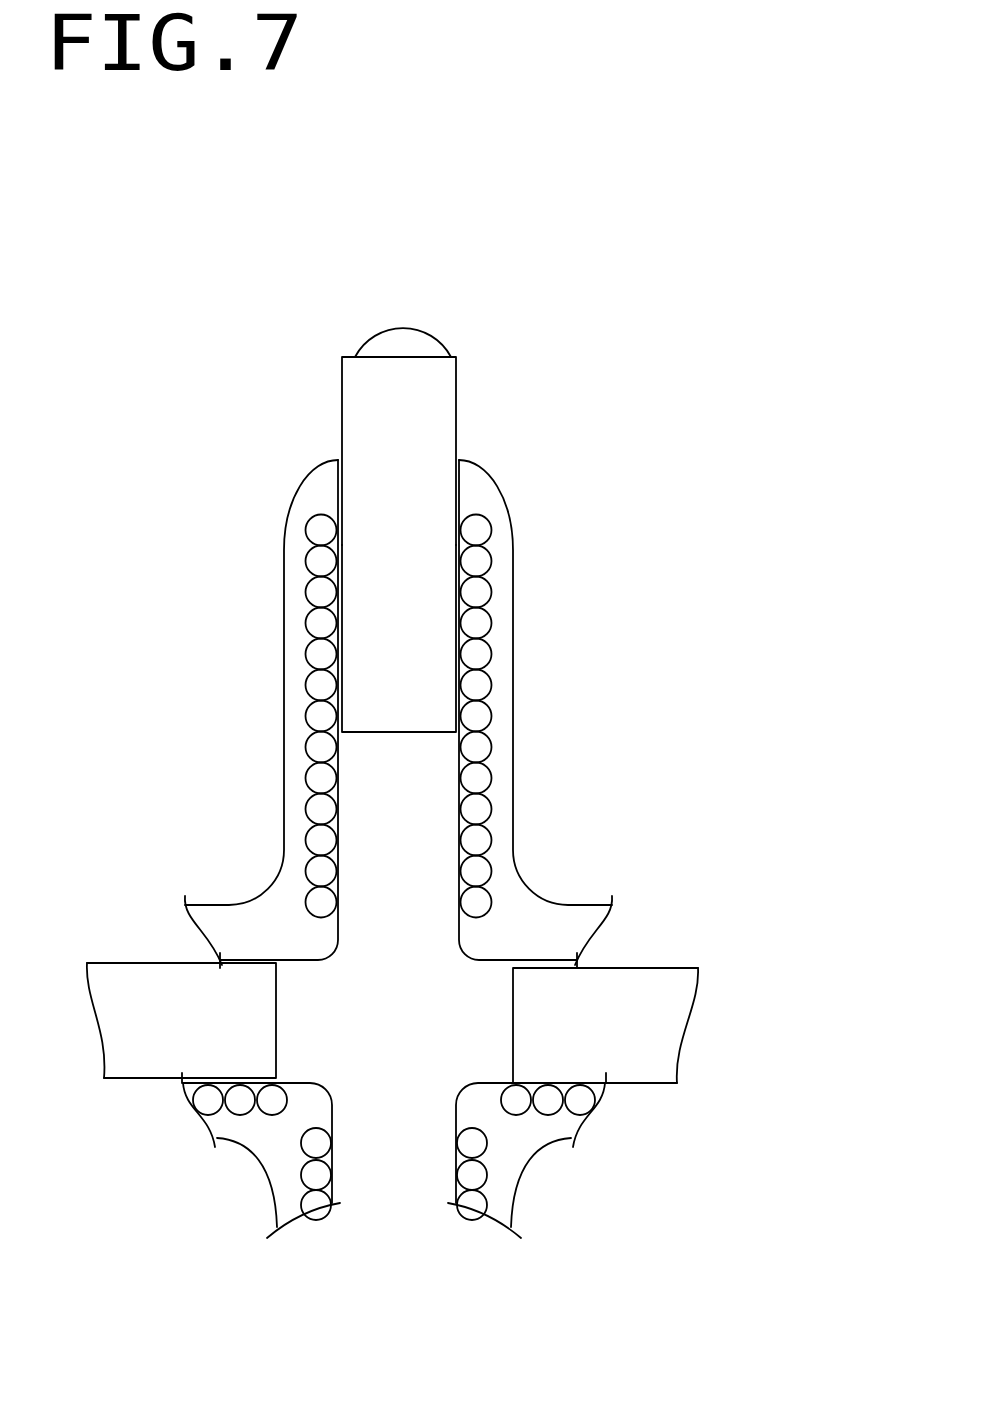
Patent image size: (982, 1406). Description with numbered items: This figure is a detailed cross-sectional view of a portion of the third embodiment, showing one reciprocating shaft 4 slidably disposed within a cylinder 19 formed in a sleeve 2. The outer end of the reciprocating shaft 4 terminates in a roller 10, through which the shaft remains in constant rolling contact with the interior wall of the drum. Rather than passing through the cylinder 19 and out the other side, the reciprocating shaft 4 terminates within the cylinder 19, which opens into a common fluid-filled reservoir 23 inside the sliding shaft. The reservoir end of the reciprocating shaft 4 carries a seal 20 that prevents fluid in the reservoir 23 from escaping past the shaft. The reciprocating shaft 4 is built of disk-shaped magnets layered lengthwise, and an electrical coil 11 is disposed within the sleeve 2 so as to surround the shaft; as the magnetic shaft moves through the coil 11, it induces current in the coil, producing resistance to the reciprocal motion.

The roller 10 is at (415, 335).
The reciprocating shaft 4 is at (415, 433).
The seal 20 is at (420, 682).
The sleeve 2 is at (320, 500).
The cylinder 19 is at (340, 507).
The electrical coil 11 is at (318, 777).
The reservoir 23 is at (383, 978).